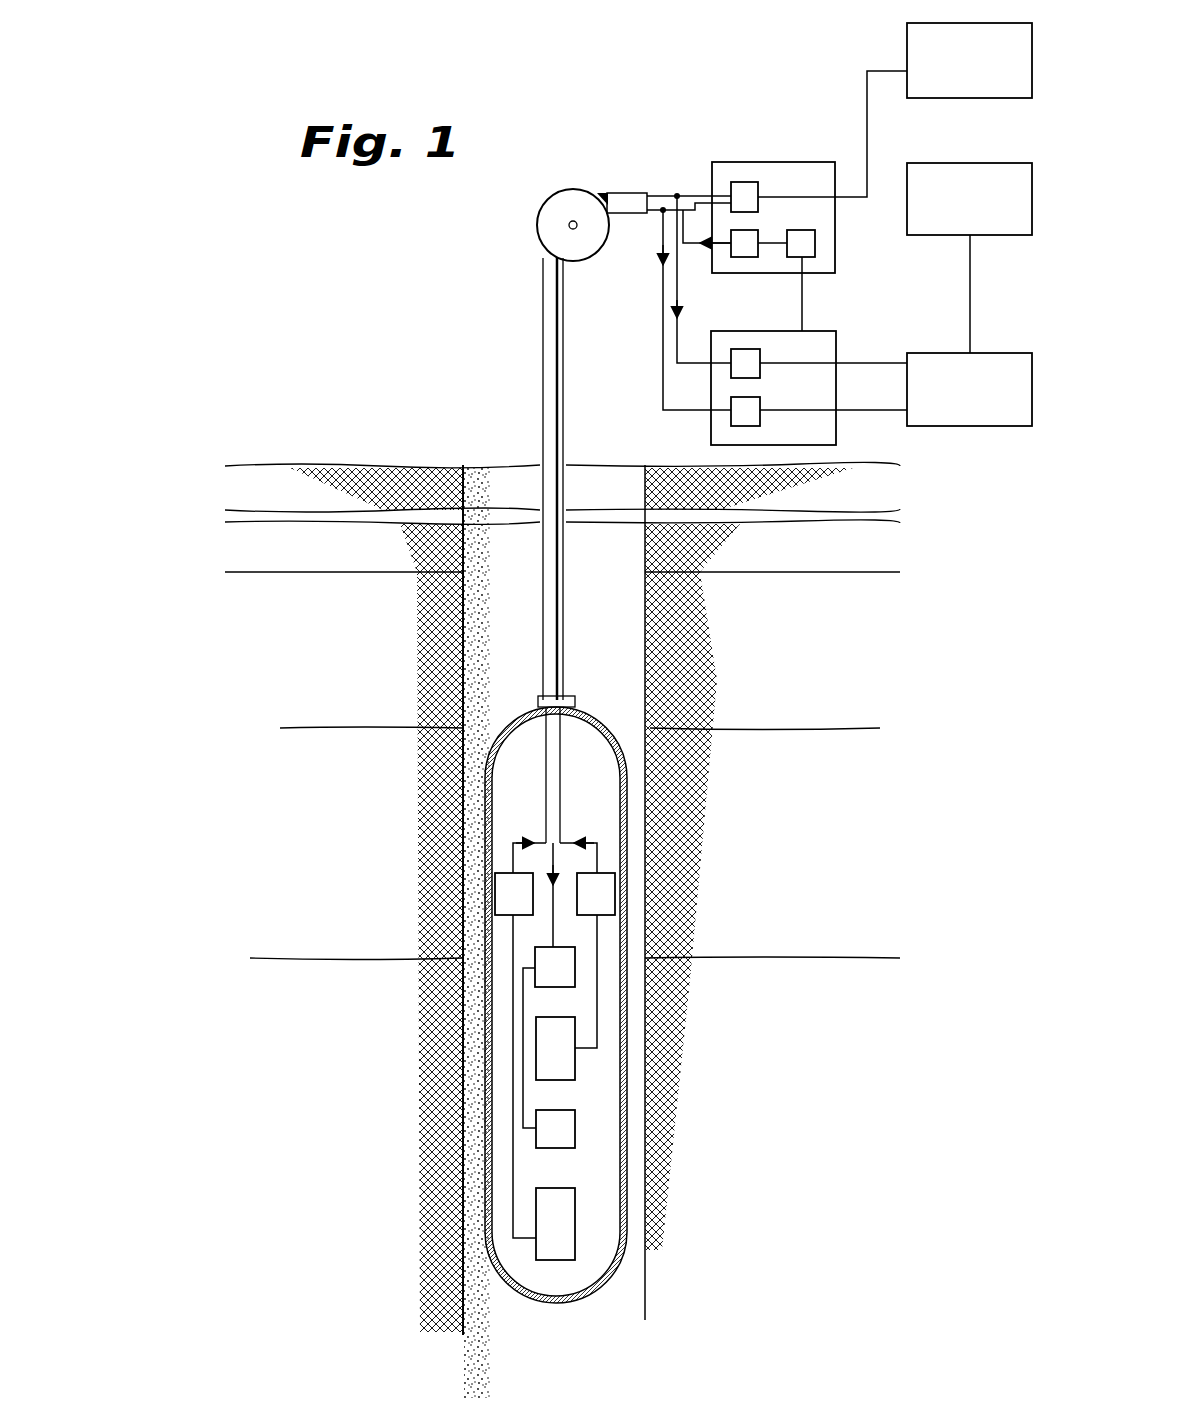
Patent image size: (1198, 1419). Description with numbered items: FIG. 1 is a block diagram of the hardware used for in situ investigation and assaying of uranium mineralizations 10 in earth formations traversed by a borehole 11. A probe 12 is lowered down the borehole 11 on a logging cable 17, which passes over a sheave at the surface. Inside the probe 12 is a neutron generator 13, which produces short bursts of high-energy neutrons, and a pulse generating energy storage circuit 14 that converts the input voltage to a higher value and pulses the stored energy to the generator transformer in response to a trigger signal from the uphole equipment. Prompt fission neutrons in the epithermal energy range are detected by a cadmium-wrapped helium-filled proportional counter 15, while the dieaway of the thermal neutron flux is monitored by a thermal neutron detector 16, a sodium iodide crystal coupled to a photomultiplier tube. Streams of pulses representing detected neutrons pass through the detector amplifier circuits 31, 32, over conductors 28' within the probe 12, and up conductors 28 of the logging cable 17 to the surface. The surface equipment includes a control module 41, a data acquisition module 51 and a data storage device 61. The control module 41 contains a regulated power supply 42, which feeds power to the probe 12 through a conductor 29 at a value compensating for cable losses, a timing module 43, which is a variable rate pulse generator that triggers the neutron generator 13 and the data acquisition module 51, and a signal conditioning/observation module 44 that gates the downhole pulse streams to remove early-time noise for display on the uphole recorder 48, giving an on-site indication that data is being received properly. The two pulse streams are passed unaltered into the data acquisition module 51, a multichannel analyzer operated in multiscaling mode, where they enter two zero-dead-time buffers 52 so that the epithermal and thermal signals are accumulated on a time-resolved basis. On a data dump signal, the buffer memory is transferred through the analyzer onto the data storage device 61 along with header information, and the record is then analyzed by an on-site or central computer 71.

The uranium mineralizations 10 is at (562, 930).
The borehole 11 is at (554, 900).
The probe 12 is at (505, 720).
The neutron generator 13 is at (536, 1140).
The pulse generating energy storage circuit 14 is at (575, 965).
The cadmium-wrapped 3He-filled proportional counter 15 is at (568, 1250).
The thermal neutron detector 16 is at (575, 1065).
The logging cable 17 is at (548, 432).
The conductors 28 is at (664, 287).
The conductors 28' is at (639, 827).
The conductor 29 is at (684, 247).
The detector amplifier circuit 31 is at (495, 888).
The detector amplifier circuit 32 is at (615, 900).
The control module 41 is at (712, 182).
The regulated power supply 42 is at (750, 258).
The timing module 43 is at (815, 245).
The signal conditioning/observation module 44 is at (735, 183).
The uphole recorder 48 is at (907, 50).
The data acquisition module 51 is at (830, 348).
The zero-dead-time buffers 52 is at (731, 417).
The data storage device 61 is at (993, 353).
The computer 71 is at (925, 165).